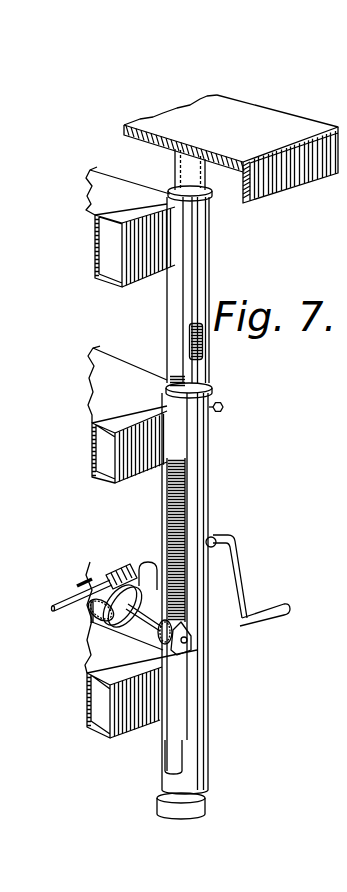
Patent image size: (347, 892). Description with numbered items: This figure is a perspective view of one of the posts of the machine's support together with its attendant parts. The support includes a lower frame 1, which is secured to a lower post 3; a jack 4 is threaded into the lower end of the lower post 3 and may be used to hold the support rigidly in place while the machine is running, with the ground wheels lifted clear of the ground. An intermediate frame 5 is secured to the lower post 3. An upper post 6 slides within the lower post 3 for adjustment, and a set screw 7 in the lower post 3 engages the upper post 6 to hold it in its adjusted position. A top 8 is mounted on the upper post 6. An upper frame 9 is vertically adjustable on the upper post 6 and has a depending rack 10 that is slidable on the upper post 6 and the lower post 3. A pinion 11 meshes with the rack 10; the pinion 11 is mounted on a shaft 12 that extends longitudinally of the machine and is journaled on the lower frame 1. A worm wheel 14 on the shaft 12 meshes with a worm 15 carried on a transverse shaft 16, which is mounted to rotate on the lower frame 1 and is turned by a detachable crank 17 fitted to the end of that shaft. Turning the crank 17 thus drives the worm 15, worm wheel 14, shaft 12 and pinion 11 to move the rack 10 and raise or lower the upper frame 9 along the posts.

The lower frame 1 is at (87, 693).
The lower posts 3 is at (190, 750).
The jacks 4 is at (206, 814).
The intermediate frame 5 is at (110, 396).
The upper posts 6 is at (207, 294).
The set screws 7 is at (224, 408).
The top 8 is at (163, 112).
The upper frame 9 is at (87, 232).
The racks 10 is at (182, 497).
The pinions 11 is at (186, 622).
The shafts 12 is at (84, 580).
The worm wheels 14 is at (96, 617).
The worms 15 is at (121, 572).
The transverse shaft 16 is at (53, 600).
The detachable cranks 17 is at (243, 582).